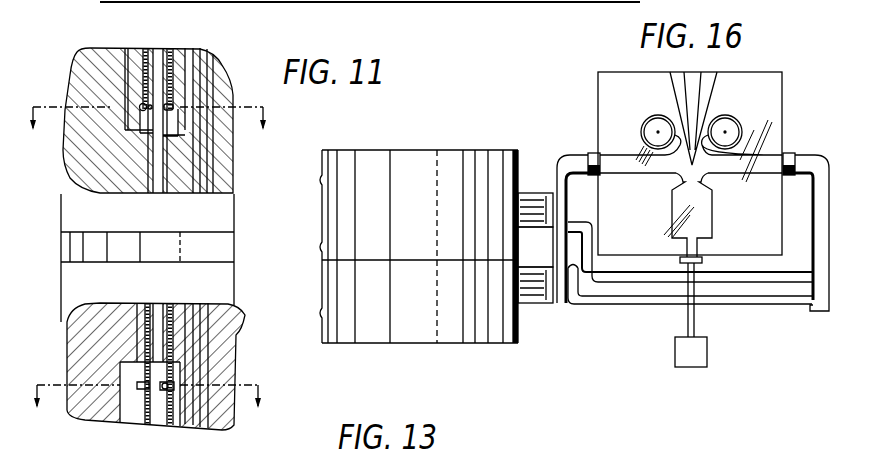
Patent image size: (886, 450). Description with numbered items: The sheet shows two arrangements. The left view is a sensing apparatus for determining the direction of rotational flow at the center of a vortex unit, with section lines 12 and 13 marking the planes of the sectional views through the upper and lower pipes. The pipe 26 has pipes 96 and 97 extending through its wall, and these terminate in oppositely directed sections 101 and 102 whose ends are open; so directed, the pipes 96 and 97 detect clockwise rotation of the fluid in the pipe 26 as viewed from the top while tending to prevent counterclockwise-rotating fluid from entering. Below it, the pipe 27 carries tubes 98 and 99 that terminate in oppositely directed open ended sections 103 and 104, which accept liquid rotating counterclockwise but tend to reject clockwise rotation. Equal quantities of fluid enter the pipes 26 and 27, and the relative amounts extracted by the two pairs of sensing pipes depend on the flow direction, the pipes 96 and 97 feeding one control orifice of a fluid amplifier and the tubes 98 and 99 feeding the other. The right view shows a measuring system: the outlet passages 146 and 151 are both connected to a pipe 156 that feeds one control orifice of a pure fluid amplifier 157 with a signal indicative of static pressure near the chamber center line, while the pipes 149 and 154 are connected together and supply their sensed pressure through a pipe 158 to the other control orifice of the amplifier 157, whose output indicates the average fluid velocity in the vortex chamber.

In FIG. 11, the section line 12- 12 is at (145, 136).
In FIG. 11, the section line 13- 13 is at (145, 414).
In FIG. 11, the pipe 26 is at (178, 68).
In FIG. 11, the pipe 27 is at (173, 385).
In FIG. 11, the pipe 96 is at (140, 105).
In FIG. 11, the pipe 97 is at (175, 107).
In FIG. 11, the tube 98 is at (143, 382).
In FIG. 11, the tube 99 is at (175, 386).
In FIG. 11, the oppositely directed section 101 is at (153, 104).
In FIG. 11, the oppositely directed section 102 is at (166, 104).
In FIG. 11, the open ended section 103 is at (148, 390).
In FIG. 11, the open ended section 104 is at (162, 392).
In FIG. 16, the outlet passage 146 is at (538, 193).
In FIG. 16, the pipe 149 is at (539, 208).
In FIG. 16, the outlet passage 151 is at (530, 305).
In FIG. 16, the pipe 154 is at (542, 288).
In FIG. 16, the pipe 156 is at (577, 157).
In FIG. 16, the pure fluid amplifier 157 is at (770, 98).
In FIG. 16, the pipe 158 is at (817, 167).